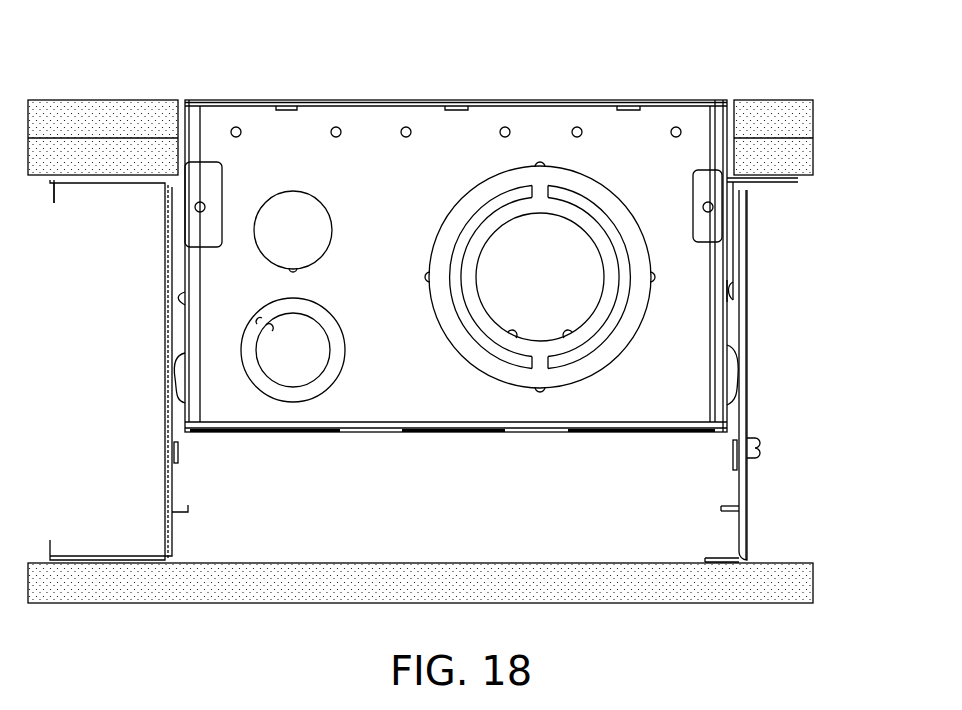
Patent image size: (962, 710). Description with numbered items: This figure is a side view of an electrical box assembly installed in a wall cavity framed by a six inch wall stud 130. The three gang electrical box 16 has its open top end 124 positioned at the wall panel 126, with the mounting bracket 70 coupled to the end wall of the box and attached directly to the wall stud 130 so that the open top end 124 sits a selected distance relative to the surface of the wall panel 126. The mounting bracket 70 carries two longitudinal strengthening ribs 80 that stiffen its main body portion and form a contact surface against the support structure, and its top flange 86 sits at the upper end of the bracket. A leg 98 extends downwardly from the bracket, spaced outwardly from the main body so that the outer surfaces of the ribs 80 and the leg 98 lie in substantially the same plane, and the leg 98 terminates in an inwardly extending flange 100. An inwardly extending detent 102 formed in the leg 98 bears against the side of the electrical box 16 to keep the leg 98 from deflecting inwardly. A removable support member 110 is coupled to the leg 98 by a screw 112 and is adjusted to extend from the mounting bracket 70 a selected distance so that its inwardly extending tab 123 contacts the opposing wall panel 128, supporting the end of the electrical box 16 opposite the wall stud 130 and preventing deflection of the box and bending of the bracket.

The three gang electrical box 16 is at (485, 100).
The mounting bracket 70 is at (174, 489).
The strengthening ribs 80 is at (165, 242).
The top flange 86 is at (765, 184).
The leg 98 is at (180, 432).
The inwardly extending flange 100 is at (721, 508).
The detent 102 is at (180, 378).
The removable support member 110 is at (747, 526).
The screw 112 is at (758, 440).
The inwardly extending tab 123 is at (705, 557).
The open top end 124 is at (601, 100).
The wall panel 126 is at (64, 100).
The opposing wall panel 128 is at (625, 604).
The six inch wall stud 130 is at (172, 530).